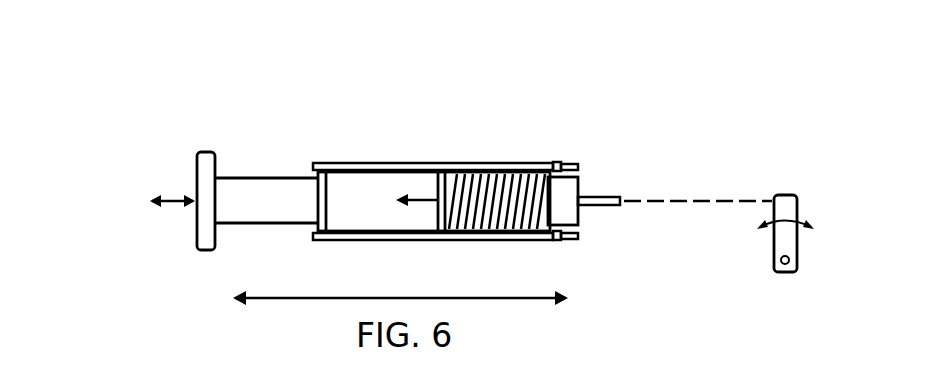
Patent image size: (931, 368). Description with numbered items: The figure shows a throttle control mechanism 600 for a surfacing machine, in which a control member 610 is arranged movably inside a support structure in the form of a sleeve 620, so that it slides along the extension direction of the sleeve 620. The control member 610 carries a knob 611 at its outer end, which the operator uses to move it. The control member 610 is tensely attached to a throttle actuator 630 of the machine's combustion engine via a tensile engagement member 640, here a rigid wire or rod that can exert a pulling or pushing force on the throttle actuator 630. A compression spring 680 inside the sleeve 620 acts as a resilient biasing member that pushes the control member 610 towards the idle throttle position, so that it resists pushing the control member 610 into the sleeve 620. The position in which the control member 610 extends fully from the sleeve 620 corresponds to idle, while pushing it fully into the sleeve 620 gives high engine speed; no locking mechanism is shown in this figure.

The throttle control mechanism 600 is at (118, 58).
The control member 610 is at (280, 193).
The knob 611 is at (205, 152).
The support structure (sleeve) 620 is at (401, 170).
The throttle actuator 630 is at (790, 194).
The tensile engagement member 640 is at (614, 194).
The compression spring 680 is at (496, 182).